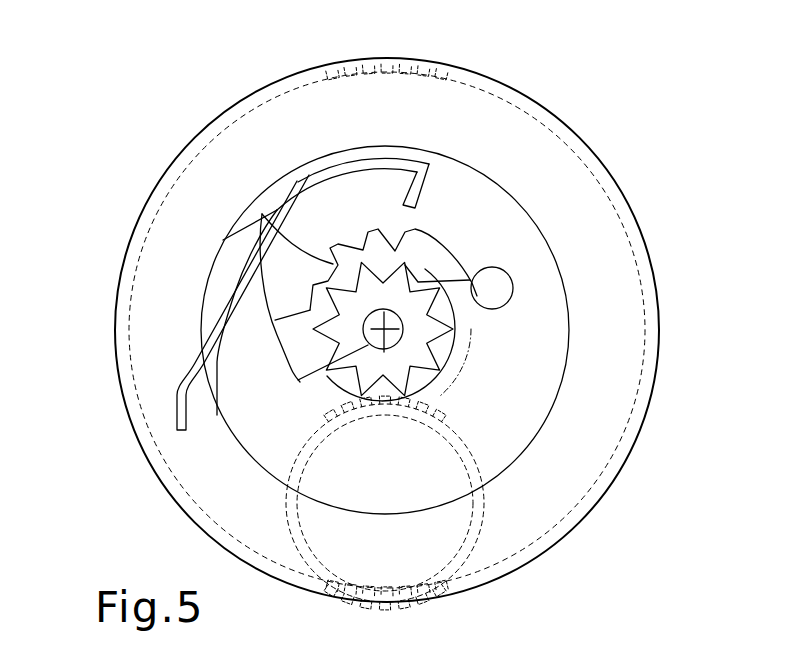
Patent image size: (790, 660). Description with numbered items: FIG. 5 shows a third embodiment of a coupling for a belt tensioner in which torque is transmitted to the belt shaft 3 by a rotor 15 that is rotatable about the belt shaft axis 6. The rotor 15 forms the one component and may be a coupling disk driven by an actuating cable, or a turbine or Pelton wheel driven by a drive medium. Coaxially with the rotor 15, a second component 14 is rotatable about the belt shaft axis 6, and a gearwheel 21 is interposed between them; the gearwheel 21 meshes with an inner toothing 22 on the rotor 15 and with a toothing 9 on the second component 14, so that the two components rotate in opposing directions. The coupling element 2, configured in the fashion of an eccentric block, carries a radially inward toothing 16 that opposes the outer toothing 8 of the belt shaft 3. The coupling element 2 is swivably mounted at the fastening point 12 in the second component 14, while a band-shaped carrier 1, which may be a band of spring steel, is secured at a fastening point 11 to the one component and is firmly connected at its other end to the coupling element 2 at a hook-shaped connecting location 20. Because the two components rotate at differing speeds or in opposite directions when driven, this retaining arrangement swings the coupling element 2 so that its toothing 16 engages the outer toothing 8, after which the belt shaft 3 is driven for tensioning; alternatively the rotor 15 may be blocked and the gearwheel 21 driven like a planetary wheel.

The band-shaped carrier 1 is at (240, 282).
The coupling element 2 is at (392, 188).
The belt shaft 3 is at (306, 378).
The belt shaft axis 6 is at (398, 327).
The outer toothing 8 is at (410, 272).
The toothing 9 is at (415, 405).
The fastening point 11 is at (178, 412).
The fastening point 12 is at (510, 283).
The second component 14 is at (530, 390).
The rotor 15 is at (143, 333).
The toothing 16 is at (262, 214).
The connecting location 20 is at (420, 190).
The gearwheel 21 is at (480, 520).
The inner toothing 22 is at (330, 585).